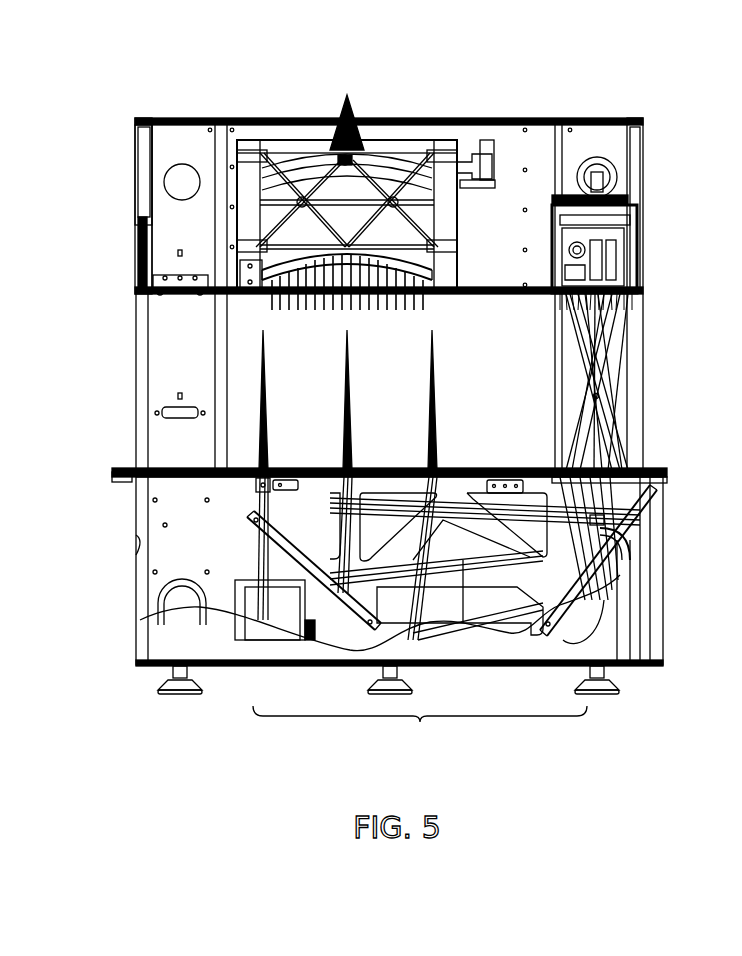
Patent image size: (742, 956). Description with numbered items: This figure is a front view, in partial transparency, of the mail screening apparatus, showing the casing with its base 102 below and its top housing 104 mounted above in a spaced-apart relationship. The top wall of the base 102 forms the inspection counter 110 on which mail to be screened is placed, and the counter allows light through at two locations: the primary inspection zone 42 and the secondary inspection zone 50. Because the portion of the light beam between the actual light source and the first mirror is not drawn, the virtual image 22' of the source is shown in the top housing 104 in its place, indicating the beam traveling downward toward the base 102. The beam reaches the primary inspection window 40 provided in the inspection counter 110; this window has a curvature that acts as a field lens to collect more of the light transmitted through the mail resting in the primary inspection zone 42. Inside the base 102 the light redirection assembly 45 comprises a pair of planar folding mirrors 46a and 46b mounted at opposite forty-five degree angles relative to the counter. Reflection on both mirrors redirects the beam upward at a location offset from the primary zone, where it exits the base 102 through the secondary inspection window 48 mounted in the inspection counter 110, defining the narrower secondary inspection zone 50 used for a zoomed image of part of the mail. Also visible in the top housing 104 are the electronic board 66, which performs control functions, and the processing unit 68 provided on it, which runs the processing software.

The virtual image of the light source 22' is at (366, 174).
The processing unit 68 is at (596, 172).
The electronic board 66 is at (606, 206).
The top housing 104 is at (145, 177).
The inspection counter 110 is at (122, 468).
The primary inspection zone 42 is at (292, 457).
The secondary inspection zone 50 is at (647, 441).
The secondary inspection window 48 is at (612, 478).
The primary inspection window 40 is at (258, 486).
The folding mirror 46a is at (278, 553).
The folding mirror 46b is at (600, 567).
The base 102 is at (160, 557).
The light redirection assembly 45 is at (420, 733).